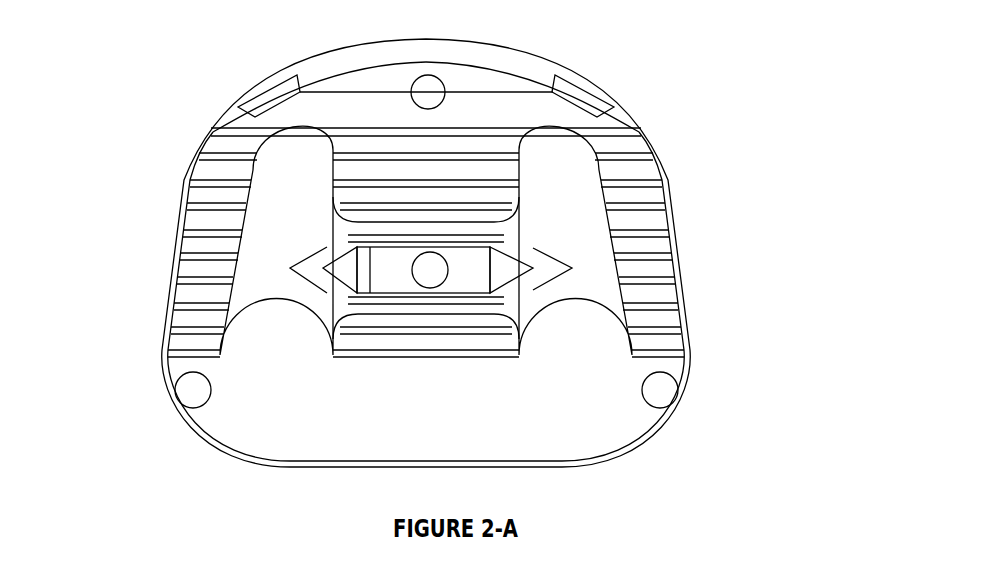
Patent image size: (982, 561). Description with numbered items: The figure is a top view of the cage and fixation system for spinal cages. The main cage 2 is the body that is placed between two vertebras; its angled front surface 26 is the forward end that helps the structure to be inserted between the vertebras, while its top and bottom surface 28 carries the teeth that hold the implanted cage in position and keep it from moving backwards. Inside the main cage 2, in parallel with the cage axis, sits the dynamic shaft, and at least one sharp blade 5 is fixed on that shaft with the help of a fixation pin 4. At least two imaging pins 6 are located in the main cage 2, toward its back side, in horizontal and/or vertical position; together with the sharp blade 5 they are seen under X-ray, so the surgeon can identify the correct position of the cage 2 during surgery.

The main cage 2 is at (610, 447).
The angled front surface 26 is at (330, 67).
The imaging pins 6 is at (444, 88).
The fixation pin 4 is at (430, 270).
The sharp blade 5 is at (352, 267).
The top and bottom surface 28 is at (373, 346).